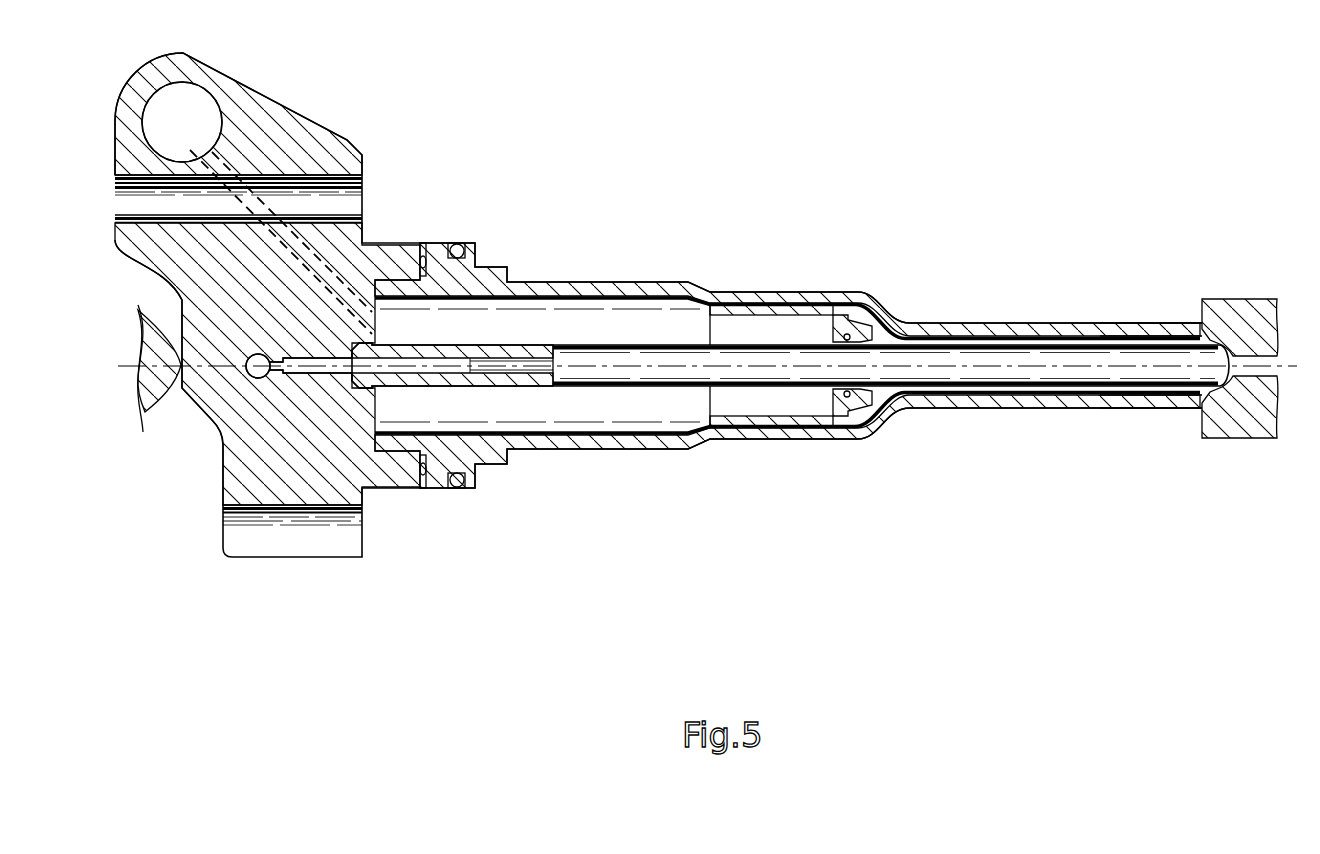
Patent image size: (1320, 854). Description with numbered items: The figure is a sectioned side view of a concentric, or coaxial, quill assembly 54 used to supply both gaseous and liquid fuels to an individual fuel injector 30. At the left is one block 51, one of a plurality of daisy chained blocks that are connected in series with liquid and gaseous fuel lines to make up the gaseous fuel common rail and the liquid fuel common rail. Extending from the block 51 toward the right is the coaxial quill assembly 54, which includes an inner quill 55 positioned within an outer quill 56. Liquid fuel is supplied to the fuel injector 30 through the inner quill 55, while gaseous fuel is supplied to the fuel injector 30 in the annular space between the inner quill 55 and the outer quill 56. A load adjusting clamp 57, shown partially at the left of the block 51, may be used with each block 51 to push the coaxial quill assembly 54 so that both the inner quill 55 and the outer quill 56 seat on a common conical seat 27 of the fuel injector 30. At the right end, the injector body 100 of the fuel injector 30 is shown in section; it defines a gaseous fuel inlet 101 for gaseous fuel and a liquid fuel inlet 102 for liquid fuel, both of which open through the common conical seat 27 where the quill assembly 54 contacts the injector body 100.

The common conical seat 27 is at (1200, 323).
The fuel injector 30 is at (1200, 410).
The block 51 is at (273, 100).
The coaxial quill assembly 54 is at (672, 305).
The inner quill 55 is at (580, 345).
The outer quill 56 is at (888, 306).
The load adjusting clamp 57 is at (160, 405).
The injector body 100 is at (1261, 373).
The gaseous fuel inlet 101 is at (1232, 397).
The liquid fuel inlet 102 is at (1237, 330).